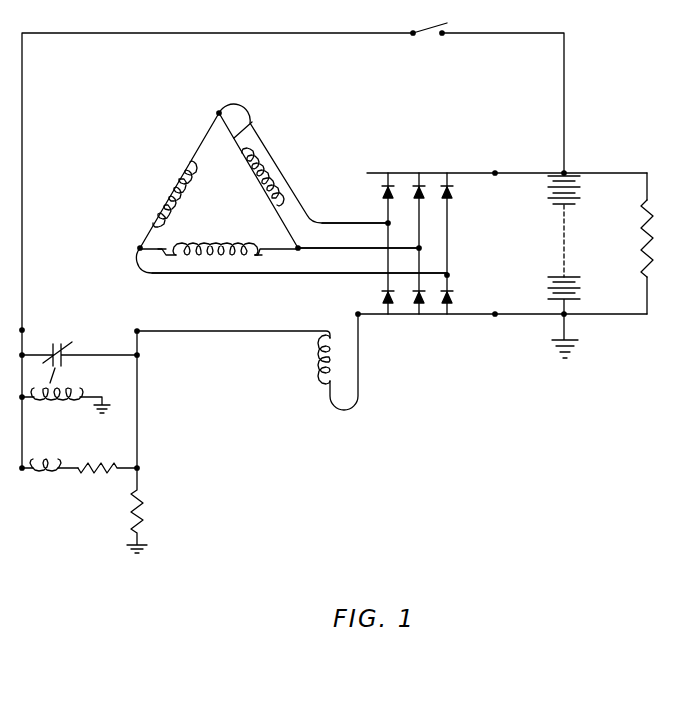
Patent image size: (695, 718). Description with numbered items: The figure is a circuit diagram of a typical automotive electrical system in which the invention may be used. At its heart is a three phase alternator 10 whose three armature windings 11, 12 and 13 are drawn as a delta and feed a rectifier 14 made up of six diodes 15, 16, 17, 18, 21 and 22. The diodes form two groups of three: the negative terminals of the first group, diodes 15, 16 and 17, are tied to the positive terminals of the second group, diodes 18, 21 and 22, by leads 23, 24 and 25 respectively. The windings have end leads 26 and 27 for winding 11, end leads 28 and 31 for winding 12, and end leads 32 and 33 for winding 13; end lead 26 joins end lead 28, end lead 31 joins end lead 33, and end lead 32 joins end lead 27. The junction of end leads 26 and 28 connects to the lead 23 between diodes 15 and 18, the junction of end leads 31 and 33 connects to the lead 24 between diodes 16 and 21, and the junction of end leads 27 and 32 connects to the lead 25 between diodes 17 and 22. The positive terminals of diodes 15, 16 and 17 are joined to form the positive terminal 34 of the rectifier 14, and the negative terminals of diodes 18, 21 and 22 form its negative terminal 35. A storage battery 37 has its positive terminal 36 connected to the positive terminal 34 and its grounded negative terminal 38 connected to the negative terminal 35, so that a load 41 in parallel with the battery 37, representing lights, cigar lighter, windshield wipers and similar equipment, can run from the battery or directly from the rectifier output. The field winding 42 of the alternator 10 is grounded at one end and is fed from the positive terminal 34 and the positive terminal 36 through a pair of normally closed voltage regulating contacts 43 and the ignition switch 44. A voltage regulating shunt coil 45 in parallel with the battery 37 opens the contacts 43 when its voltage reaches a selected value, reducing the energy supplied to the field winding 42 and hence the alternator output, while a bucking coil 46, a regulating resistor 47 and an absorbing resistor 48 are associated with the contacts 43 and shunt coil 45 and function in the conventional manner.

The three phase alternator 10 is at (198, 313).
The armature winding 11 is at (180, 168).
The armature winding 12 is at (260, 160).
The armature winding 13 is at (213, 245).
The rectifier 14 is at (489, 226).
The diode 15 is at (388, 194).
The diode 16 is at (421, 194).
The diode 17 is at (449, 194).
The diode 18 is at (383, 303).
The diode 21 is at (417, 303).
The diode 22 is at (452, 303).
The lead 23 is at (388, 211).
The lead 24 is at (420, 230).
The lead 25 is at (447, 258).
The end lead 26 is at (203, 140).
The end lead 27 is at (145, 238).
The end lead 28 is at (252, 122).
The end lead 31 is at (301, 216).
The end lead 32 is at (160, 249).
The end lead 33 is at (262, 250).
The positive terminal of the rectifier 34 is at (403, 173).
The negative terminal of the rectifier 35 is at (430, 315).
The positive terminal of the storage battery 36 is at (564, 173).
The storage battery 37 is at (573, 205).
The negative terminal of the storage battery 38 is at (564, 314).
The load 41 is at (647, 238).
The field winding 42 is at (318, 365).
The voltage regulating contacts 43 is at (60, 343).
The ignition switch 44 is at (433, 20).
The voltage regulating shunt coil 45 is at (67, 400).
The bucking coil 46 is at (52, 474).
The regulating resistor 47 is at (97, 473).
The absorbing resistor 48 is at (143, 507).